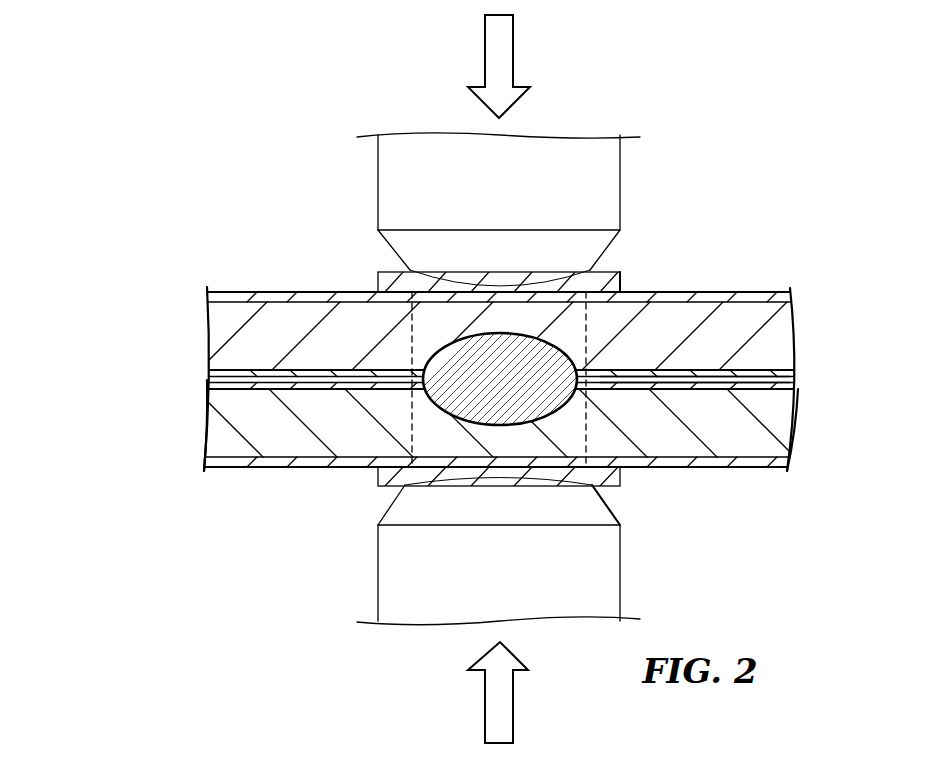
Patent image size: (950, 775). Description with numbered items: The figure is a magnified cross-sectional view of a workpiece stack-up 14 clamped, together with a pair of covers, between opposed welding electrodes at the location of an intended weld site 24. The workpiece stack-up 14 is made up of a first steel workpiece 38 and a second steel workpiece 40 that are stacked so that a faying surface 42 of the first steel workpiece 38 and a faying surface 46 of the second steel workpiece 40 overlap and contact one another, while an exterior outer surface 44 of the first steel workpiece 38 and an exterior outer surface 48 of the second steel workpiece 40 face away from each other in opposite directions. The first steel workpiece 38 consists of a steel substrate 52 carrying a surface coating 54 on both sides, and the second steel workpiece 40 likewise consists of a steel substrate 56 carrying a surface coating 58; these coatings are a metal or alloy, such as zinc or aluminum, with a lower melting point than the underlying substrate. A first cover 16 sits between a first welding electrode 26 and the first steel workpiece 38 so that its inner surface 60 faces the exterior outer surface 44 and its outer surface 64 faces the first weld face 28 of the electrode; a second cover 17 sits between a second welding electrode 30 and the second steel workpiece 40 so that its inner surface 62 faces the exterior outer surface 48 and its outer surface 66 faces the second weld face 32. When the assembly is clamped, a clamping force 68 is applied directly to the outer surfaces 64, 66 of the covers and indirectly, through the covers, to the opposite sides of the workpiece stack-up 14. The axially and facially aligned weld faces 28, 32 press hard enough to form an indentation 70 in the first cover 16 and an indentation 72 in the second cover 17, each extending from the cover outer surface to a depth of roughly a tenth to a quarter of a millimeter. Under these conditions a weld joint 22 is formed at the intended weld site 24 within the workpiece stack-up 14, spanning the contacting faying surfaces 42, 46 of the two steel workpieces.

The workpiece stack-up 14 is at (481, 380).
The first cover 16 is at (623, 283).
The second cover 17 is at (622, 475).
The weld joint 22 is at (427, 402).
The intended weld site 24 is at (586, 323).
The first welding electrode 26 is at (377, 180).
The first weld face 28 is at (415, 283).
The second welding electrode 30 is at (378, 563).
The second weld face 32 is at (395, 483).
The first steel workpiece 38 is at (207, 333).
The second steel workpiece 40 is at (202, 430).
The faying surface 42 is at (330, 388).
The exterior outer surface 44 is at (742, 290).
The faying surface 46 is at (678, 375).
The exterior outer surface 48 is at (750, 467).
The steel substrate 52 is at (798, 330).
The surface coating 54 is at (795, 295).
The steel substrate 56 is at (787, 423).
The surface coating 58 is at (790, 458).
The inner surface 60 is at (378, 296).
The inner surface 62 is at (375, 452).
The outer surface 64 is at (610, 264).
The outer surface 66 is at (603, 490).
The clamping force 68 is at (513, 30).
The indentation 70 is at (543, 273).
The indentation 72 is at (537, 485).